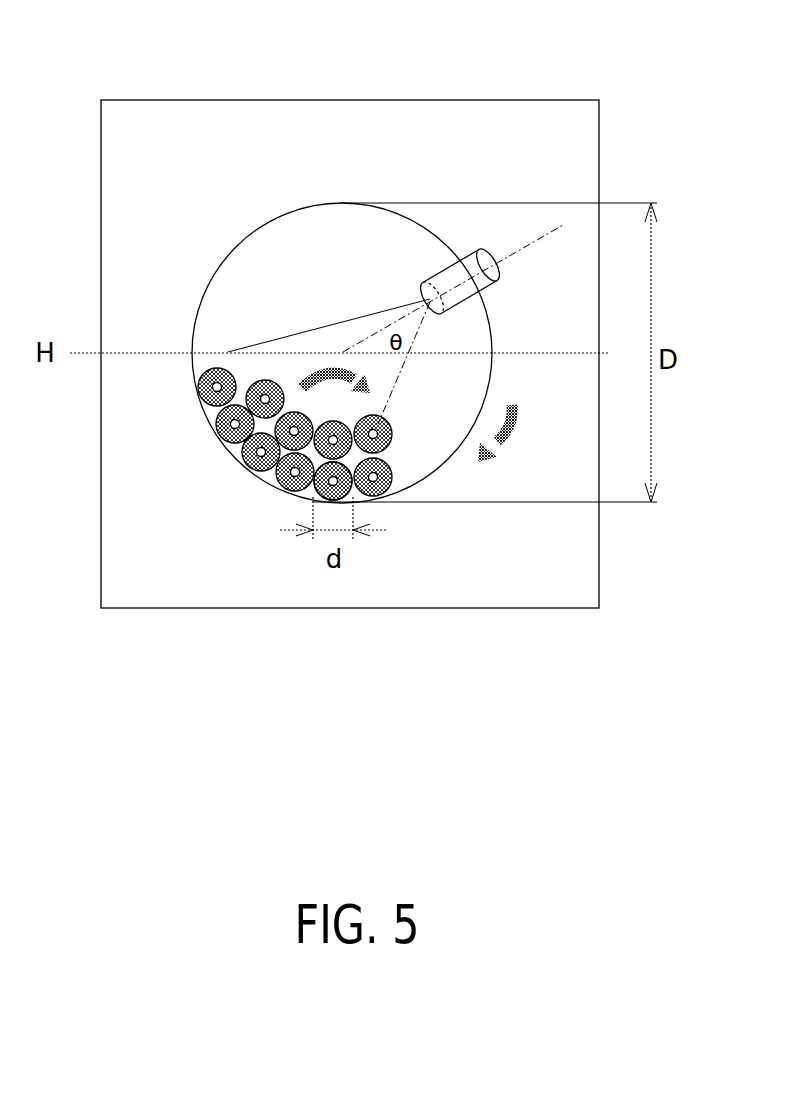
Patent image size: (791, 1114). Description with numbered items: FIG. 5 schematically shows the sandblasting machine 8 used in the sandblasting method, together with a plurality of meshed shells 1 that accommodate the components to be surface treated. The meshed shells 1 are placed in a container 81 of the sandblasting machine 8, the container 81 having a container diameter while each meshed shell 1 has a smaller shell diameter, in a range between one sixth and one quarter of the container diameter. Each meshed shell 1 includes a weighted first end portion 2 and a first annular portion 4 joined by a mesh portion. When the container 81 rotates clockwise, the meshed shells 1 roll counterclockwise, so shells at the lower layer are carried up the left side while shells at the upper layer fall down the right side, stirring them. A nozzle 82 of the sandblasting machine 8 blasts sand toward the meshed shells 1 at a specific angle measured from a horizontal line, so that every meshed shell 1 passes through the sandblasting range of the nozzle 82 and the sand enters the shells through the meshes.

The meshed shell 1 is at (312, 492).
The first end portion 2 is at (353, 499).
The first annular portion 4 is at (368, 497).
The sandblasting machine 8 is at (540, 95).
The container 81 is at (342, 203).
The nozzle 82 is at (480, 251).